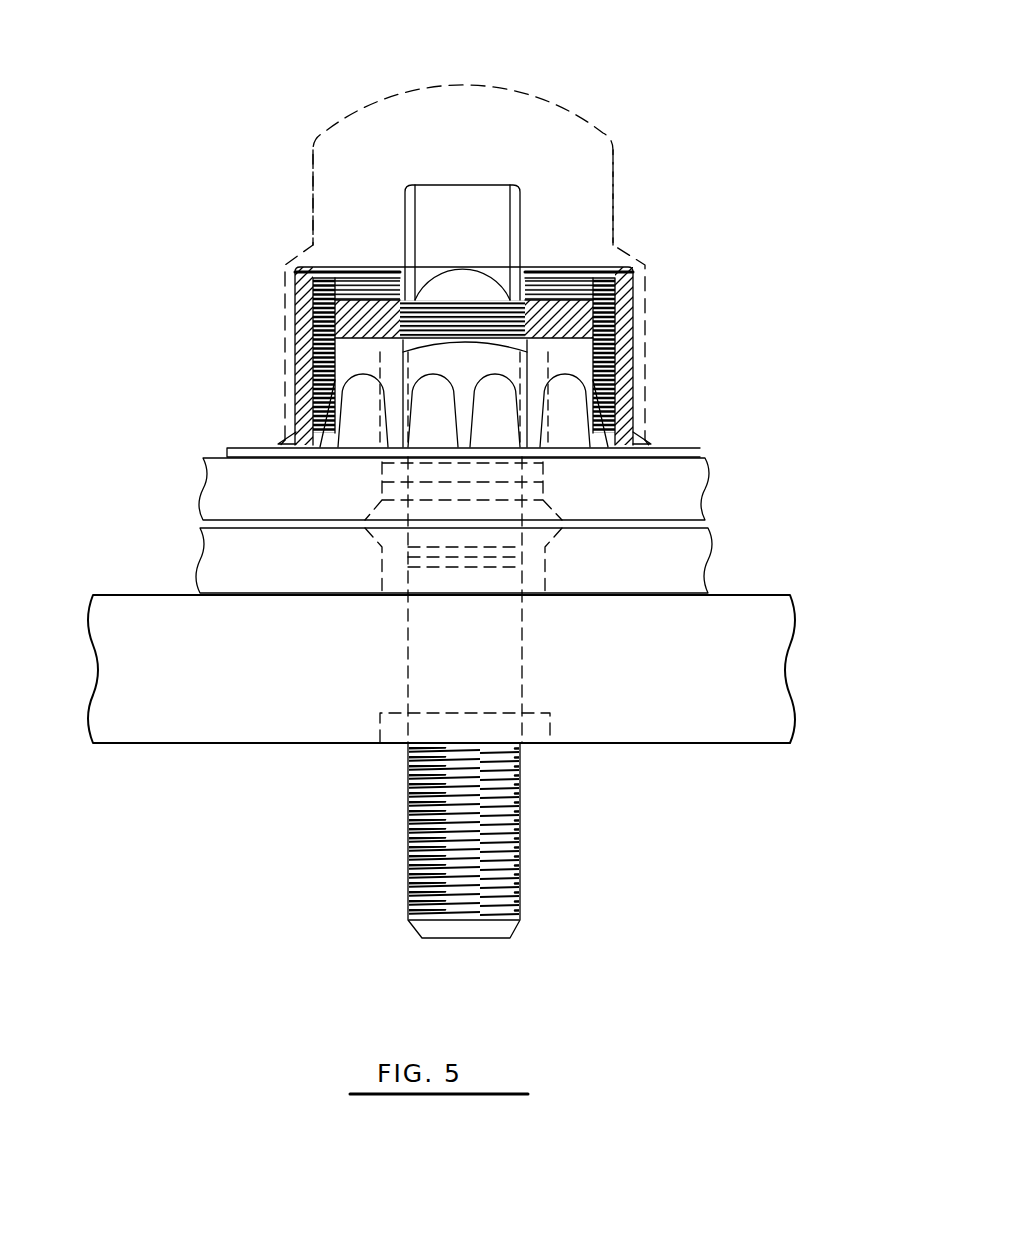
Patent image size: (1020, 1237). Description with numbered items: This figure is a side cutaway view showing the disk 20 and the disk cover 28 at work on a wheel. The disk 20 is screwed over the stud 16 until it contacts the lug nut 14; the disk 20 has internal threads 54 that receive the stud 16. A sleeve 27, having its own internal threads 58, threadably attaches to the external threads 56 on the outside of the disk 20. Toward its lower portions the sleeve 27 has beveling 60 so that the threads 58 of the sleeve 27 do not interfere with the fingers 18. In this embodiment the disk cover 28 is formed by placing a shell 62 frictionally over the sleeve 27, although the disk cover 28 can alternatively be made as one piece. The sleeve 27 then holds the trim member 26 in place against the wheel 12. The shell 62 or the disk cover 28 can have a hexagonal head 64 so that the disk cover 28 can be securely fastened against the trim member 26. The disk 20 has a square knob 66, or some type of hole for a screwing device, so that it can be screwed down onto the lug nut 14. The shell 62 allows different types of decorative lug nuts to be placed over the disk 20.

The wheel 12 is at (705, 500).
The lug nut 14 is at (575, 360).
The stud 16 is at (520, 843).
The fingers 18 is at (345, 412).
The disk 20 is at (335, 328).
The trim member 26 is at (700, 448).
The sleeve 27 is at (622, 320).
The disk cover 28 is at (593, 125).
The internal threads 54 is at (545, 268).
The external threads 56 is at (330, 306).
The internal threads 58 is at (612, 283).
The beveling 60 is at (290, 437).
The shell 62 is at (618, 183).
The hexagonal head 64 is at (310, 172).
The square knob 66 is at (455, 282).